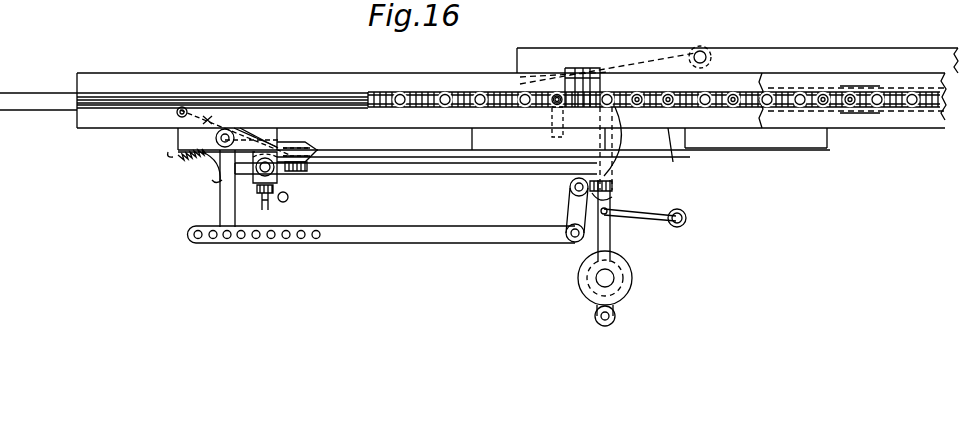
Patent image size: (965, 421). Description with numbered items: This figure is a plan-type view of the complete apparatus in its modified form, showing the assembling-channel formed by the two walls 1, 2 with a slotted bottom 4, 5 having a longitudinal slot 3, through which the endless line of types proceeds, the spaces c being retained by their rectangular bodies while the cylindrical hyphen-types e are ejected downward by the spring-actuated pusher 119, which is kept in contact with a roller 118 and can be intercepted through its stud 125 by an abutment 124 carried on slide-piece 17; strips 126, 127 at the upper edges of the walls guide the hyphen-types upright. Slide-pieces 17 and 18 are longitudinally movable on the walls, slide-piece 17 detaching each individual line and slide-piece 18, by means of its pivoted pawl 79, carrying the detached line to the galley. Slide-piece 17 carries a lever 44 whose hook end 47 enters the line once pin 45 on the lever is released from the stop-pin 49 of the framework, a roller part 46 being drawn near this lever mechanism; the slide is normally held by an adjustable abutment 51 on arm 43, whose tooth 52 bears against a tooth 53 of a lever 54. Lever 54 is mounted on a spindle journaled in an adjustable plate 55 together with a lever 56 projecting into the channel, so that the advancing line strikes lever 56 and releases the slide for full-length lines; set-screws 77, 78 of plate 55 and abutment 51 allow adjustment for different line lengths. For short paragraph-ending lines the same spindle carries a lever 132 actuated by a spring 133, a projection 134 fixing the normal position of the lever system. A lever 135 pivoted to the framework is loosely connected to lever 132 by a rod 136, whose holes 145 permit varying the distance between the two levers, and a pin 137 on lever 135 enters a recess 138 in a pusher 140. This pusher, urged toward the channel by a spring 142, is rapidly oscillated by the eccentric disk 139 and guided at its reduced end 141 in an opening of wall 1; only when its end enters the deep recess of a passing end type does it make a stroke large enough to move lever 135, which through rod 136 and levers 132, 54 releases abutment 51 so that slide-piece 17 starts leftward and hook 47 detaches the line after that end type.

The channel wall 1 is at (511, 100).
The channel wall 2 is at (354, 92).
The longitudinal slot 3 is at (292, 101).
The channel bottom 4 is at (95, 100).
The channel bottom 5 is at (145, 95).
The space c is at (447, 99).
The hyphen-type e is at (833, 92).
The slide-piece 17 is at (756, 138).
The slide-piece 18 is at (737, 60).
The arm 43 is at (420, 152).
The lever 44 is at (420, 172).
The pin 45 is at (262, 200).
The roller 46 is at (259, 172).
The hook end 47 is at (624, 120).
The stop-pin 49 is at (288, 198).
The adjustable abutment 51 is at (318, 151).
The tooth 52 is at (305, 148).
The tooth 53 is at (273, 140).
The lever 54 is at (246, 134).
The adjustable plate 55 is at (180, 139).
The lever 56 is at (233, 131).
The set-screw 77 is at (213, 182).
The set-screw 78 is at (300, 171).
The pawl 79 is at (522, 79).
The roller 118 is at (601, 78).
The pusher 119 is at (554, 104).
The abutment 124 is at (673, 150).
The stud 125 is at (564, 121).
The strip 126 is at (860, 118).
The strip 127 is at (838, 90).
The lever 132 is at (220, 211).
The spring 133 is at (192, 168).
The projection 134 is at (170, 153).
The lever 135 is at (575, 203).
The rod 136 is at (412, 220).
The pin 137 is at (613, 197).
The recess 138 is at (613, 185).
The eccentric disk 139 is at (632, 280).
The pusher 140 is at (612, 246).
The pusher end 141 is at (604, 121).
The spring 142 is at (632, 214).
The holes 145 is at (316, 240).